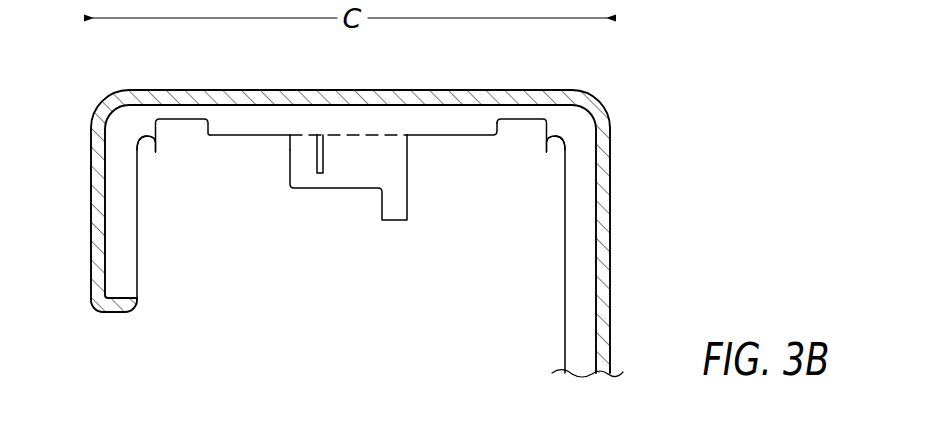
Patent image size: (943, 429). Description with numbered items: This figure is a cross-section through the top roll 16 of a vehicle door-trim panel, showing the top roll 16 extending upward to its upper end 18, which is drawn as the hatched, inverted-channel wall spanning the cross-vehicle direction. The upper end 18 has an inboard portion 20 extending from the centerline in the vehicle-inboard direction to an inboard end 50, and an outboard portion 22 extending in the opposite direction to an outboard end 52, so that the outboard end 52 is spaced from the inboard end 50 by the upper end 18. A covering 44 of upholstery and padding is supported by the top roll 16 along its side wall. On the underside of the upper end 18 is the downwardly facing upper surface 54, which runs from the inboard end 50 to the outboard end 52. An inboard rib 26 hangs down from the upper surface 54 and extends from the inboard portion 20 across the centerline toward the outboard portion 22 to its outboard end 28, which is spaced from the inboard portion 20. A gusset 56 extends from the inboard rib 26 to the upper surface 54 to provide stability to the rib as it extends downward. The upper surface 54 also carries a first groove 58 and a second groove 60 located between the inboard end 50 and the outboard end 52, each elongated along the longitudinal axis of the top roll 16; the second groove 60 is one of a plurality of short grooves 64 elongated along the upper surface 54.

The top roll 16 is at (642, 58).
The upper end 18 is at (463, 122).
The inboard portion 20 is at (468, 273).
The outboard portion 22 is at (229, 275).
The inboard rib 26 is at (357, 170).
The outboard end 28 is at (290, 155).
The covering 44 is at (600, 253).
The inboard end 50 is at (548, 152).
The outboard end 52 is at (152, 153).
The upper surface 54 is at (458, 137).
The gusset 56 is at (316, 157).
The first groove 58 is at (523, 118).
The second groove 60 is at (190, 171).
The short grooves 64 is at (183, 121).